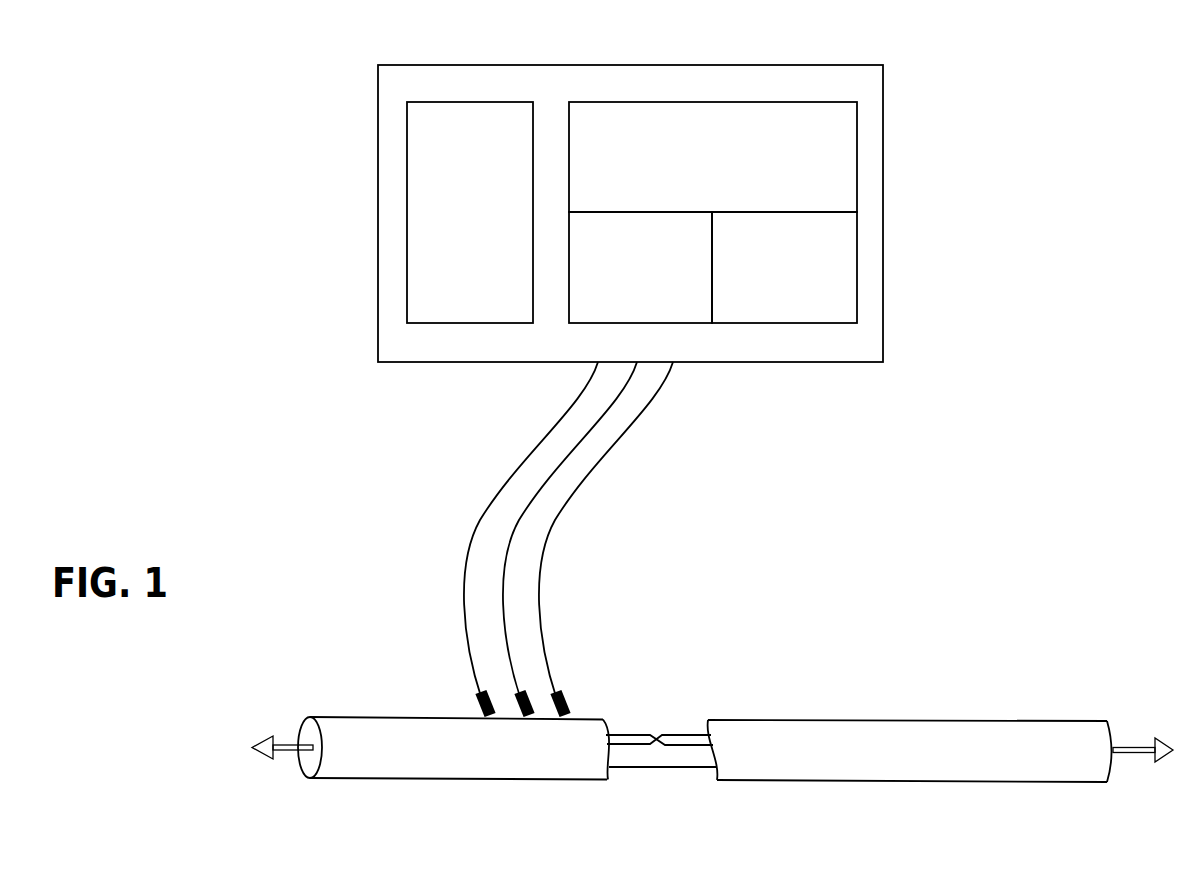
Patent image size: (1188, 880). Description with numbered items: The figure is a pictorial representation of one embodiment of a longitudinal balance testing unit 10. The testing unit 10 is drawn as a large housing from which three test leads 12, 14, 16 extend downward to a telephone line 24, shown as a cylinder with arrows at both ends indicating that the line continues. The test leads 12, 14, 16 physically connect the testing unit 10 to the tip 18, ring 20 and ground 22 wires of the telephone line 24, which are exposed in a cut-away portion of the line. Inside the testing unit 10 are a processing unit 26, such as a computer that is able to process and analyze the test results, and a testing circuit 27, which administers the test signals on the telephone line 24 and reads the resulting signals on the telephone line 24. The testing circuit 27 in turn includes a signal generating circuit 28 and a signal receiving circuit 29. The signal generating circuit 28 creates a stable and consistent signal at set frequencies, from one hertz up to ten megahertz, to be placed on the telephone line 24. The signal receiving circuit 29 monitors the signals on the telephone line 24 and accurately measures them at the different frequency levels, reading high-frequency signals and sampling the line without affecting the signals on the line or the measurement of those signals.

The longitudinal balance testing unit 10 is at (803, 75).
The test lead 12 is at (468, 555).
The test lead 14 is at (563, 467).
The test lead 16 is at (537, 598).
The tip wire 18 is at (618, 735).
The ring wire 20 is at (690, 733).
The ground wire 22 is at (667, 768).
The telephone line 24 is at (990, 718).
The processing unit 26 is at (484, 223).
The testing circuit 27 is at (726, 178).
The signal generating circuit 28 is at (654, 283).
The signal receiving circuit 29 is at (801, 283).